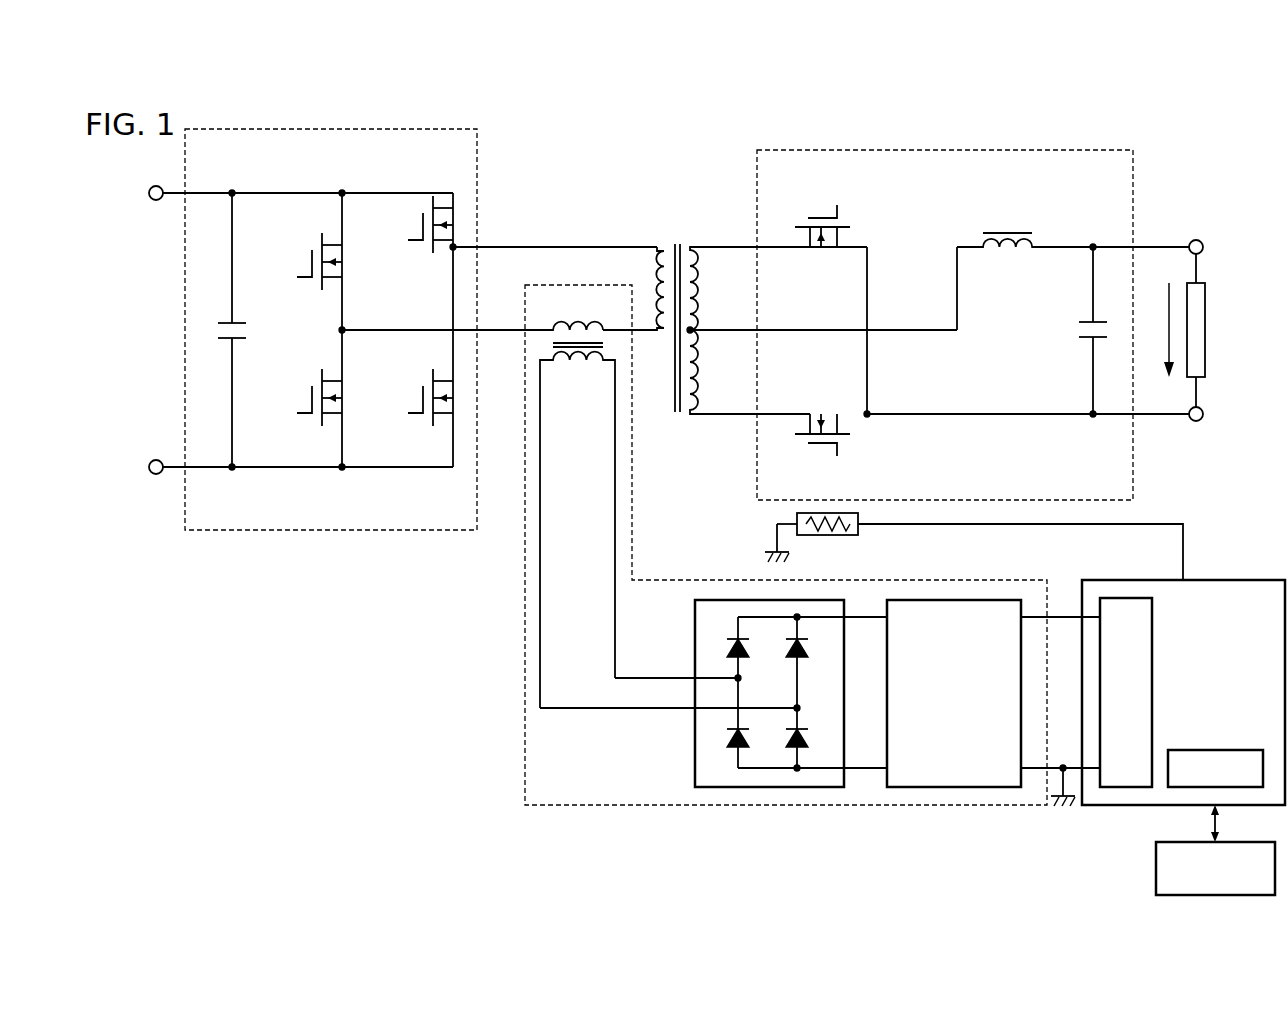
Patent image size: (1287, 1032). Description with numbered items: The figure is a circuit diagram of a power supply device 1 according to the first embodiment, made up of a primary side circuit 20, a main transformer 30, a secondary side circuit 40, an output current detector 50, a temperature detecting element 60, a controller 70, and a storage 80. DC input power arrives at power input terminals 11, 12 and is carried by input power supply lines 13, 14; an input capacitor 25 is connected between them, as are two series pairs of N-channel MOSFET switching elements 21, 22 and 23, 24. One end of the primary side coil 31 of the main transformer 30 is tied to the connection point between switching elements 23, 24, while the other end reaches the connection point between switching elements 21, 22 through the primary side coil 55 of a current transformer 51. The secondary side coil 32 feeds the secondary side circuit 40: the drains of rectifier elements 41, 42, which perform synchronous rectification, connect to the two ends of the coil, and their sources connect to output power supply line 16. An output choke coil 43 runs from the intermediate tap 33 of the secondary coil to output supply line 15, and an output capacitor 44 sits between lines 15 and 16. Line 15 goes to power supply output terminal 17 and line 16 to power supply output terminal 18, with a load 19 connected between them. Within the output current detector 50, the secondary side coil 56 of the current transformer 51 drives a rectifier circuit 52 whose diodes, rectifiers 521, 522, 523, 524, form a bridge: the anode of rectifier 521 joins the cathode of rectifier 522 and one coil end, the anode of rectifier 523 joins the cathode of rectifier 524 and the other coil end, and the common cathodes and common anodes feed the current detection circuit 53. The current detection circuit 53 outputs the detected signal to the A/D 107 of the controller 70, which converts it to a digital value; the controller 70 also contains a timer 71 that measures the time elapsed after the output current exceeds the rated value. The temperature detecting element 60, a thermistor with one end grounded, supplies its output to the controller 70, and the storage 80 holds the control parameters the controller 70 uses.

The power supply device 1 is at (652, 154).
The power input terminal 11 is at (157, 186).
The power input terminal 12 is at (157, 460).
The input power supply line 13 is at (271, 192).
The input power supply line 14 is at (271, 470).
The output power supply line 15 is at (1056, 246).
The output power supply line 16 is at (1054, 416).
The power supply output terminal 17 is at (1196, 240).
The power supply output terminal 18 is at (1201, 420).
The load 19 is at (1206, 322).
The primary side circuit 20 is at (331, 532).
The switching element 21 is at (312, 262).
The switching element 22 is at (312, 398).
The switching element 23 is at (423, 226).
The switching element 24 is at (423, 398).
The input capacitor 25 is at (227, 322).
The main transformer 30 is at (777, 293).
The primary side coil 31 is at (657, 268).
The secondary side coil 32 is at (697, 268).
The intermediate tap 33 is at (693, 330).
The secondary side circuit 40 is at (970, 150).
The rectifier element 41 is at (812, 218).
The rectifier element 42 is at (812, 458).
The output choke coil 43 is at (1000, 235).
The output capacitor 44 is at (1079, 334).
The output current detector 50 is at (525, 614).
The current transformer 51 is at (556, 483).
The rectifier circuit 52 is at (791, 668).
The current detection circuit 53 is at (986, 599).
The primary side coil 55 is at (580, 326).
The secondary side coil 56 is at (578, 363).
The temperature detecting element 60 is at (860, 533).
The controller 70 is at (1183, 670).
The timer 71 is at (1245, 750).
The storage 80 is at (1156, 868).
The A/D 107 is at (1152, 625).
The rectifier 521 is at (730, 648).
The rectifier 522 is at (730, 740).
The rectifier 523 is at (790, 650).
The rectifier 524 is at (806, 740).